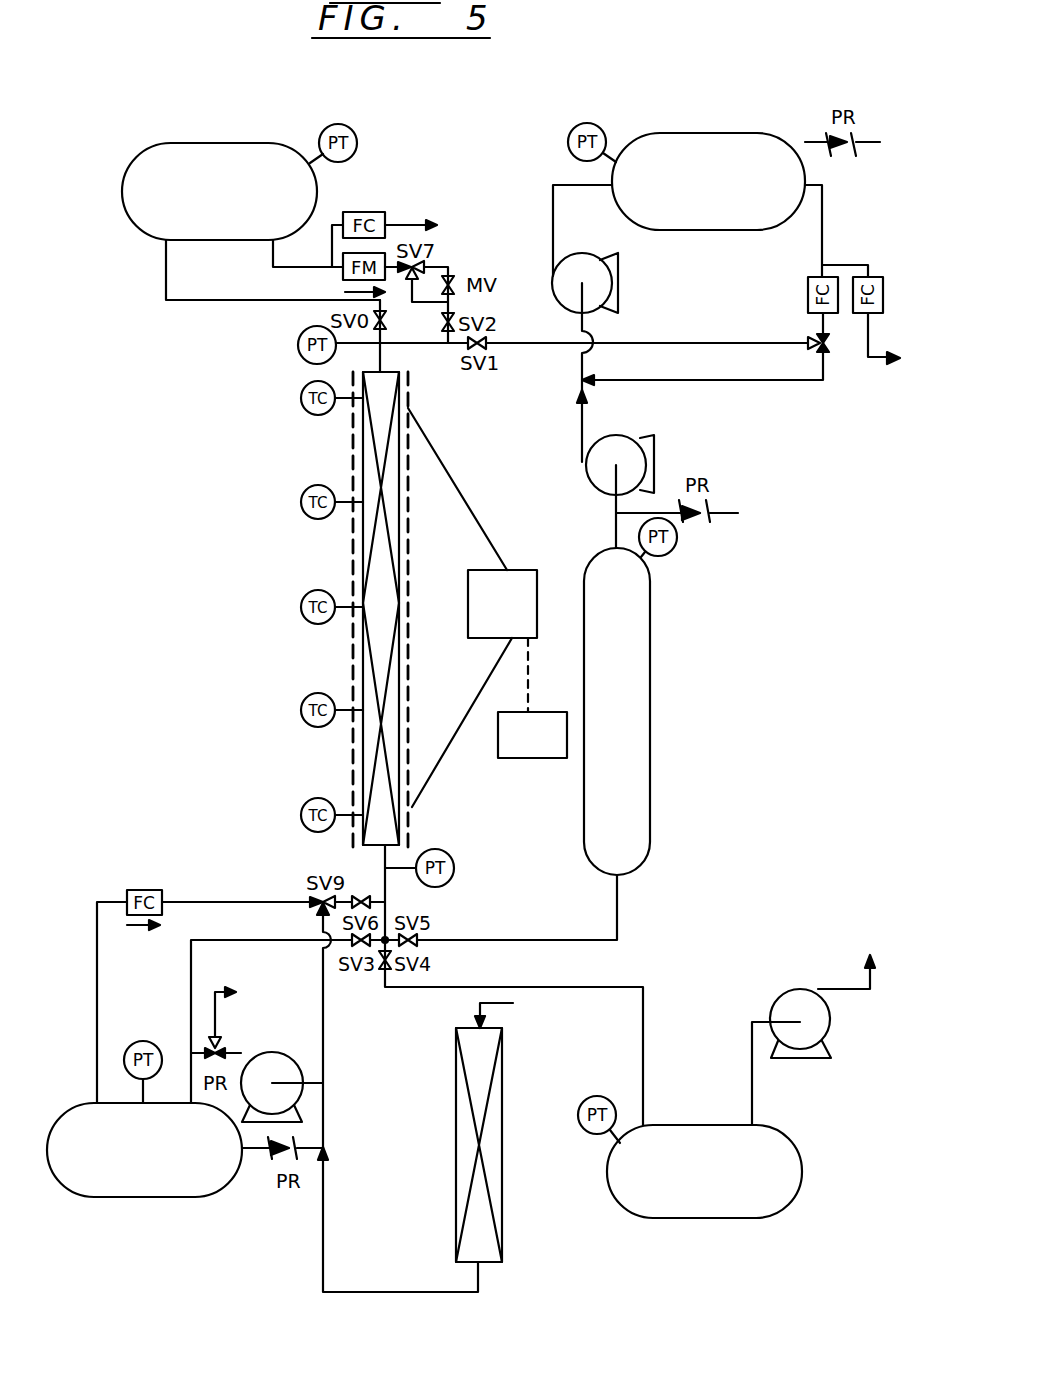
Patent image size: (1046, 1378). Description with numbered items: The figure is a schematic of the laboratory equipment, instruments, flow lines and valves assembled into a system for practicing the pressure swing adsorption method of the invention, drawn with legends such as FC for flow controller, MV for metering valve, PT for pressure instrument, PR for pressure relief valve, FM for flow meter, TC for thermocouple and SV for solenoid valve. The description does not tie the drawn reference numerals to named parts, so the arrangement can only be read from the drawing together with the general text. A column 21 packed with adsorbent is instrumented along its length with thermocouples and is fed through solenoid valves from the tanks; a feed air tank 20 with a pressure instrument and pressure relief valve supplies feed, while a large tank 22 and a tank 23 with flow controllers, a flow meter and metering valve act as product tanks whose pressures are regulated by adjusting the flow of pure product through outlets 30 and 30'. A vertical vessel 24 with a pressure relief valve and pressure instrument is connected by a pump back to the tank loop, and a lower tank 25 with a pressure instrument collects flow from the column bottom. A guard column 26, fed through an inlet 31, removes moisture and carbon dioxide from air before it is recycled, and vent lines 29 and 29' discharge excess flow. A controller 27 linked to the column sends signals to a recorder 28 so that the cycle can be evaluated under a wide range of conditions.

The feed storage vessel 20 is at (190, 1195).
The reactor column 21 is at (372, 564).
The gas supply vessel 22 is at (210, 163).
The product gas vessel 23 is at (712, 146).
The separator column 24 is at (641, 720).
The liquid collection vessel 25 is at (698, 1212).
The filter column 26 is at (456, 1128).
The controller 27 is at (517, 570).
The recorder 28 is at (578, 686).
The vent line 29 is at (235, 994).
The vent line 29' is at (866, 969).
The flow control signal output 30 is at (420, 200).
The flow control signal output 30' is at (900, 338).
The inlet line 31 is at (513, 1003).